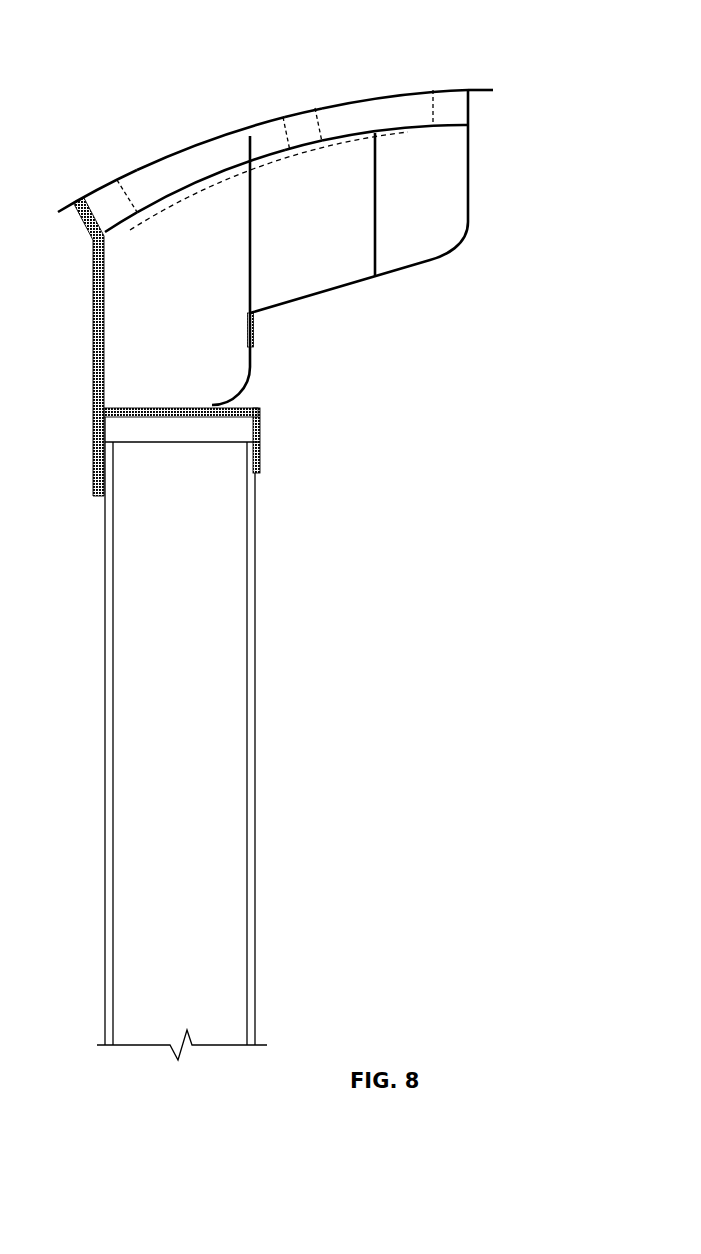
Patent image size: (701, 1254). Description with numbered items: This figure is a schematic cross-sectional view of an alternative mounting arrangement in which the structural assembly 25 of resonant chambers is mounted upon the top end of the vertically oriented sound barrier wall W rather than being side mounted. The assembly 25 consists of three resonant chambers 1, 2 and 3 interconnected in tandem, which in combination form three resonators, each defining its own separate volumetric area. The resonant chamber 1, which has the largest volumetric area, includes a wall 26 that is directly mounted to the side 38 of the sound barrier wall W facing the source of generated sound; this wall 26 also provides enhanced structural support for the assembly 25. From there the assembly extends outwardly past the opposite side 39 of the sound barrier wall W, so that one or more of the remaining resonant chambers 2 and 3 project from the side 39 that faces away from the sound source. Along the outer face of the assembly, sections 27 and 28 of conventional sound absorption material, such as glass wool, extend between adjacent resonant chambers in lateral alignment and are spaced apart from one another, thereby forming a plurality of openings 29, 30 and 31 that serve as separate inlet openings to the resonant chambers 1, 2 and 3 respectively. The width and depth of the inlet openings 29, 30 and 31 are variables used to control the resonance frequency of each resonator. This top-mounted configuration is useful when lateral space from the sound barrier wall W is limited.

The structural assembly of resonant chambers 25 is at (311, 271).
The wall 26 is at (104, 307).
The section of sound absorption material 27 is at (222, 140).
The section of sound absorption material 28 is at (380, 102).
The inlet opening 29 is at (97, 196).
The inlet opening 30 is at (300, 115).
The inlet opening 31 is at (452, 95).
The side of the sound barrier wall 38 is at (105, 648).
The opposite side of the sound barrier wall 39 is at (247, 565).
The sound barrier wall W is at (184, 738).
The resonant chamber 1 is at (174, 297).
The resonant chamber 2 is at (304, 226).
The resonant chamber 3 is at (410, 199).